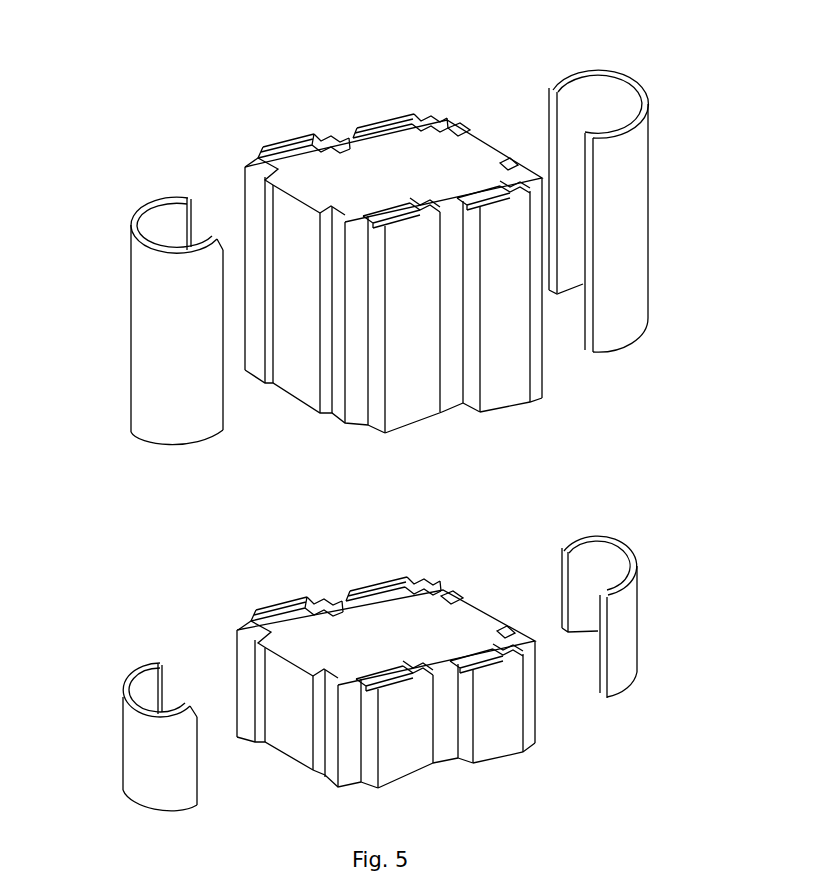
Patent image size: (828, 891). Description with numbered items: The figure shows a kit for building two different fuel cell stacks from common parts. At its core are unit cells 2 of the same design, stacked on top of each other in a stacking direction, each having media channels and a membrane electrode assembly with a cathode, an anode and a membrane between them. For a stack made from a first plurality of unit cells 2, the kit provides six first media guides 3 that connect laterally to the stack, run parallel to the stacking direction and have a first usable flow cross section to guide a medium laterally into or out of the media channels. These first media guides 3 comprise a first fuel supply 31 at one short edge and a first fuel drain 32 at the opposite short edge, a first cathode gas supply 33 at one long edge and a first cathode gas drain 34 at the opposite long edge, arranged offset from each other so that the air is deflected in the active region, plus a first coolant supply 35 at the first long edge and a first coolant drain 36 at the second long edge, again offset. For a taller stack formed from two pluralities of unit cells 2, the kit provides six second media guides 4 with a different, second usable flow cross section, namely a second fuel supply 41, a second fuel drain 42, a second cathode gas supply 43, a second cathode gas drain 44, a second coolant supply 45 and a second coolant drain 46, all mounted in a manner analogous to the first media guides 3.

The unit cells 2 is at (430, 147).
The first media guides 3 is at (389, 655).
The second media guides 4 is at (372, 250).
The first fuel supply 31 is at (130, 693).
The first fuel drain 32 is at (612, 549).
The first cathode gas supply 33 is at (377, 610).
The first cathode gas drain 34 is at (403, 758).
The first coolant supply 35 is at (283, 632).
The first coolant drain 36 is at (492, 730).
The second fuel supply 41 is at (145, 215).
The second fuel drain 42 is at (599, 108).
The second cathode gas supply 43 is at (363, 127).
The second cathode gas drain 44 is at (428, 405).
The second coolant supply 45 is at (290, 167).
The second coolant drain 46 is at (517, 380).